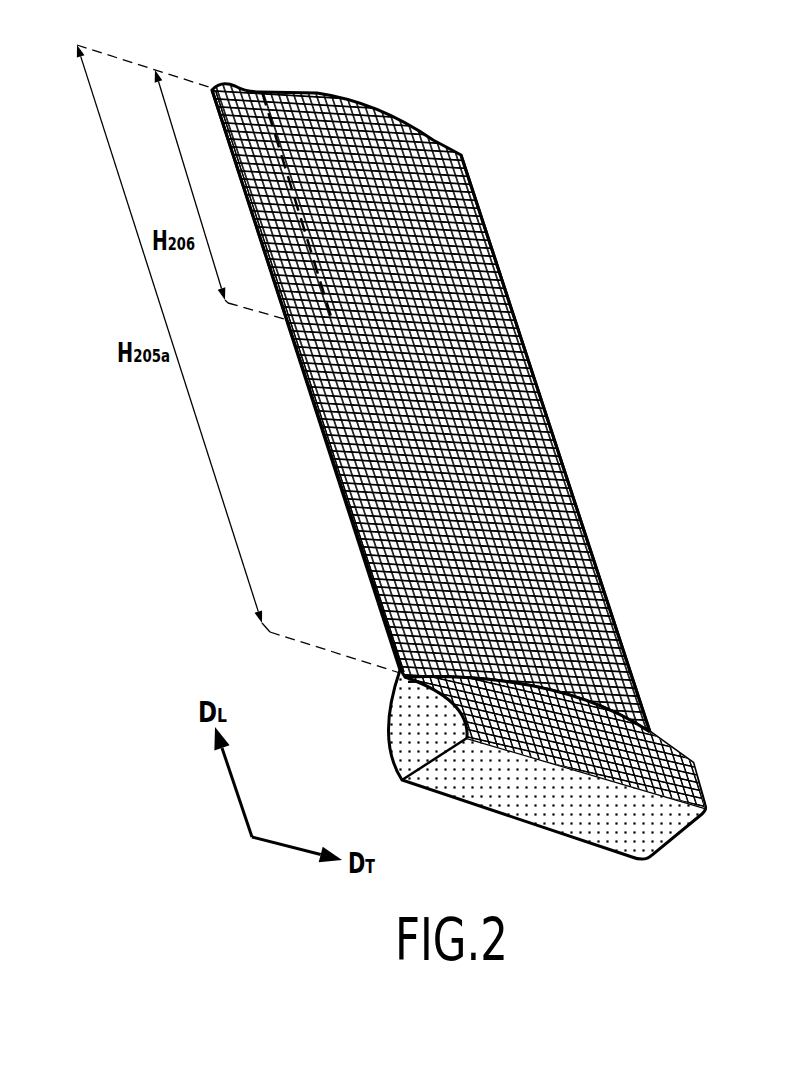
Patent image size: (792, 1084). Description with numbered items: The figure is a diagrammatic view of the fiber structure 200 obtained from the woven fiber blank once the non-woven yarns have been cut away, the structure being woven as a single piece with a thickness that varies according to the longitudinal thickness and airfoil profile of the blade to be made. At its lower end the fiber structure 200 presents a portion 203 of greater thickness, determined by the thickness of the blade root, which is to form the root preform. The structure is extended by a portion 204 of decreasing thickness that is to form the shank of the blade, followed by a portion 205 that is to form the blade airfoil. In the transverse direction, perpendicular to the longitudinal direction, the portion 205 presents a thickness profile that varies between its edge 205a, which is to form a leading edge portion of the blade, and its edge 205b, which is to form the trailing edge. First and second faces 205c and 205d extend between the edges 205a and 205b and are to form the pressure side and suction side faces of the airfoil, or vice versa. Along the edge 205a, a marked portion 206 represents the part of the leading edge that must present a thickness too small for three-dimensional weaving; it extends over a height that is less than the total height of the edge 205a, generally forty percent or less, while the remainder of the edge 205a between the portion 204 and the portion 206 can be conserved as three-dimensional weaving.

The fiber structure 200 is at (459, 452).
The portion of greater thickness 203 is at (407, 743).
The portion of decreasing thickness 204 is at (400, 686).
The airfoil portion 205 is at (437, 389).
The leading edge portion 205a is at (345, 503).
The trailing edge portion 205b is at (570, 475).
The first face 205c is at (287, 380).
The second face 205d is at (506, 445).
The small-thickness leading edge portion 206 is at (240, 90).